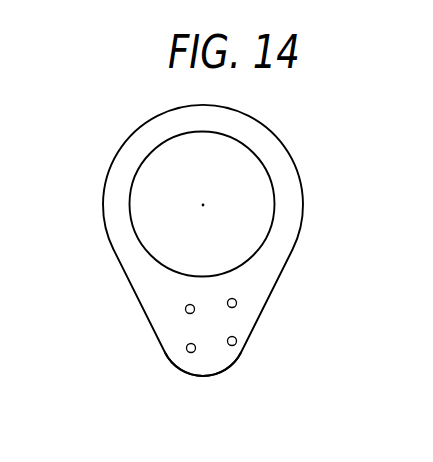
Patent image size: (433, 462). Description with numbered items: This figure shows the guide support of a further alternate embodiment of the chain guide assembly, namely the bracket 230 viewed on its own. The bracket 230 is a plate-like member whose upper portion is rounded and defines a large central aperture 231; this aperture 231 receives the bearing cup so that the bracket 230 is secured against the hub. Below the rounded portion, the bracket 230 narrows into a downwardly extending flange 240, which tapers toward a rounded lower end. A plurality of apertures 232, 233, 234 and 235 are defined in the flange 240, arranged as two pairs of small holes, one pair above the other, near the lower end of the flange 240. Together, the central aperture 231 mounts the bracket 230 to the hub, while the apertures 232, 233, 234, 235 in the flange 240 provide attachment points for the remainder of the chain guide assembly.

The bracket 230 is at (300, 182).
The aperture 231 is at (131, 222).
The aperture 232 is at (186, 312).
The aperture 233 is at (237, 302).
The aperture 234 is at (196, 350).
The aperture 235 is at (237, 339).
The downwardly extending flange 240 is at (199, 377).